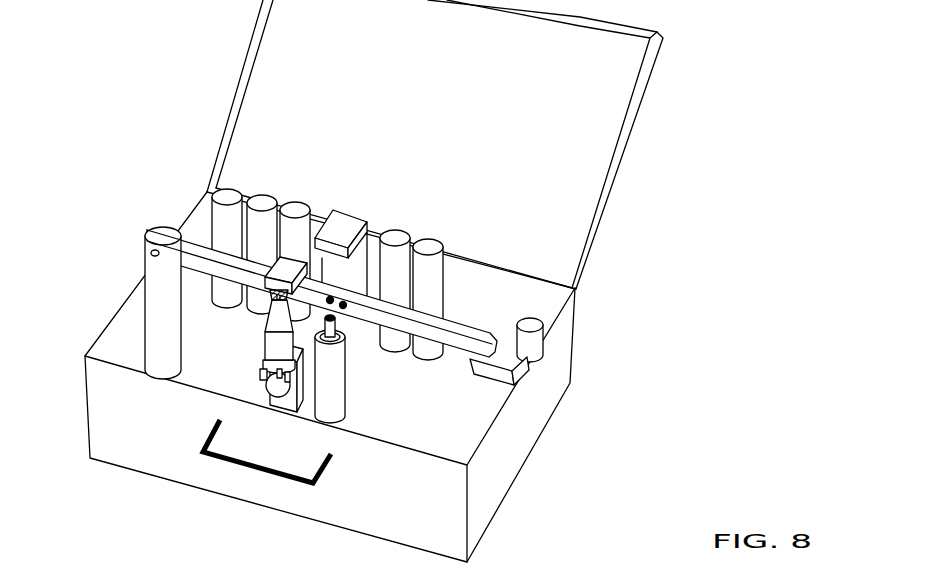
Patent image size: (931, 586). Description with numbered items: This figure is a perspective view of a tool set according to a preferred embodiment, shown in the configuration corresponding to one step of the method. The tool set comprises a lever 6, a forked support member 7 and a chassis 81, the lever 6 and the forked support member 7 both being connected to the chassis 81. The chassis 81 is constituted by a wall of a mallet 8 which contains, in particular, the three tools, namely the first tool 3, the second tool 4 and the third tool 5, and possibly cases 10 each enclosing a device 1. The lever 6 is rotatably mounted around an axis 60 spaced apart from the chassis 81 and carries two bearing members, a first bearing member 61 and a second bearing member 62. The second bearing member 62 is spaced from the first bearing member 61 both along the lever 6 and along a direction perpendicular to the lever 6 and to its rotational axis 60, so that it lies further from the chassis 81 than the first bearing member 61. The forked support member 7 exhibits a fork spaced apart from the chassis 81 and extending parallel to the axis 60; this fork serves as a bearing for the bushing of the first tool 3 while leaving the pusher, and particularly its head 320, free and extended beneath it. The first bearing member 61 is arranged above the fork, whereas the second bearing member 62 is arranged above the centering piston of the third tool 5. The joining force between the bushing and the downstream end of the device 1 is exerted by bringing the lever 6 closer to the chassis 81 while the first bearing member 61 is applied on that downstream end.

The mallet 8 is at (165, 128).
The chassis 81 is at (470, 428).
The cases 10 is at (230, 197).
The second bearing member 62 is at (345, 226).
The second tool 4 is at (532, 325).
The head 320 is at (280, 388).
The lever 6 is at (467, 337).
The axis 60 is at (155, 250).
The first bearing member 61 is at (287, 267).
The first tool 3 is at (270, 350).
The device 1 is at (272, 316).
The third tool 5 is at (338, 362).
The forked support member 7 is at (235, 393).